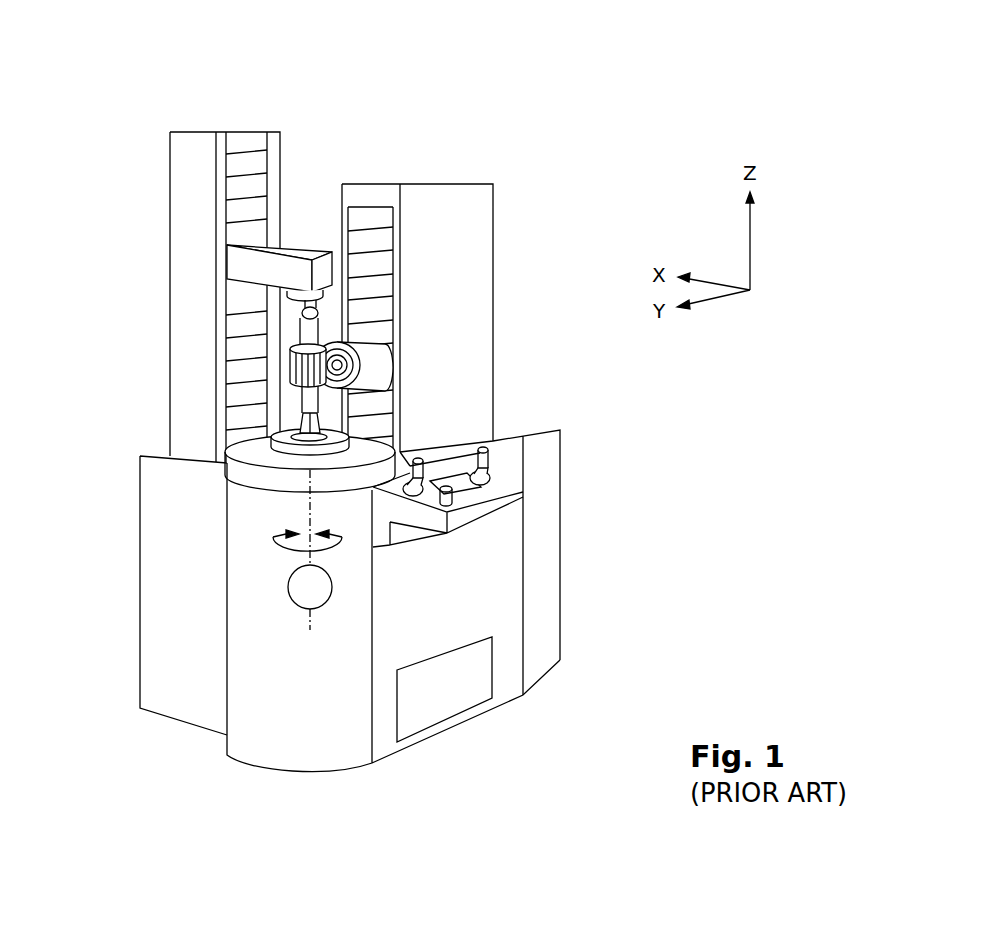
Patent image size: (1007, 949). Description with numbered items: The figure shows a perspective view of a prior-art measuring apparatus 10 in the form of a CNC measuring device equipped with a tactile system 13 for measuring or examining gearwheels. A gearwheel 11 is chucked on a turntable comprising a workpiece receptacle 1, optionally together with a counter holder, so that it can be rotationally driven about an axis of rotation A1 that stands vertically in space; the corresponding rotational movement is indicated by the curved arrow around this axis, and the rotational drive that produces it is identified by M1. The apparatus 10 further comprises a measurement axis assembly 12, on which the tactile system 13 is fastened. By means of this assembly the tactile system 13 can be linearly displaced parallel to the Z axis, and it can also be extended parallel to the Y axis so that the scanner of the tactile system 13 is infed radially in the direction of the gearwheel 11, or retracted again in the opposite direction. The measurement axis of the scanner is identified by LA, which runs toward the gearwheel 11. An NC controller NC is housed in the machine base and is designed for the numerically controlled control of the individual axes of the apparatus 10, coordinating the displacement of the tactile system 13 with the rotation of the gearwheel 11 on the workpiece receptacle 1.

The measuring apparatus 10 is at (583, 118).
The gearwheel 11 is at (290, 375).
The measurement axis assembly 12 is at (437, 260).
The tactile system 13 is at (341, 355).
The workpiece receptacle 1 is at (275, 432).
The measurement axis LA is at (290, 372).
The axis of rotation A1 is at (312, 566).
The rotational drive M1 is at (310, 587).
The NC controller NC is at (448, 687).